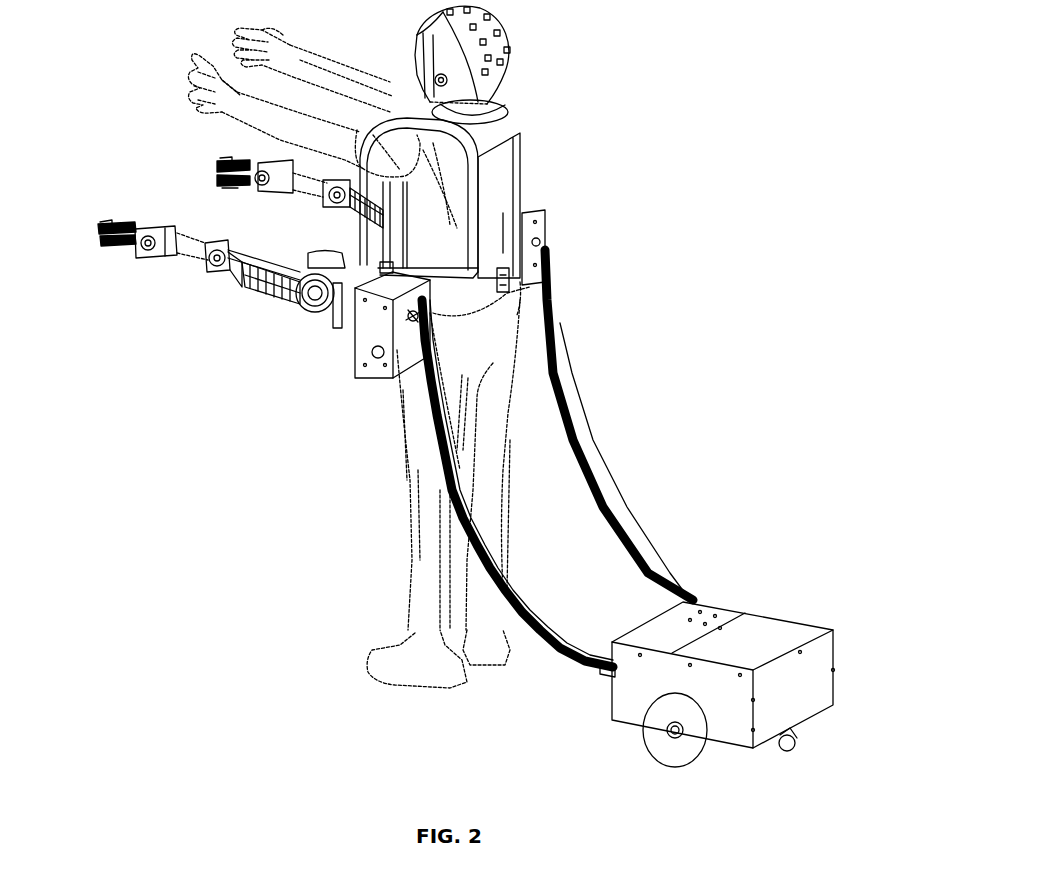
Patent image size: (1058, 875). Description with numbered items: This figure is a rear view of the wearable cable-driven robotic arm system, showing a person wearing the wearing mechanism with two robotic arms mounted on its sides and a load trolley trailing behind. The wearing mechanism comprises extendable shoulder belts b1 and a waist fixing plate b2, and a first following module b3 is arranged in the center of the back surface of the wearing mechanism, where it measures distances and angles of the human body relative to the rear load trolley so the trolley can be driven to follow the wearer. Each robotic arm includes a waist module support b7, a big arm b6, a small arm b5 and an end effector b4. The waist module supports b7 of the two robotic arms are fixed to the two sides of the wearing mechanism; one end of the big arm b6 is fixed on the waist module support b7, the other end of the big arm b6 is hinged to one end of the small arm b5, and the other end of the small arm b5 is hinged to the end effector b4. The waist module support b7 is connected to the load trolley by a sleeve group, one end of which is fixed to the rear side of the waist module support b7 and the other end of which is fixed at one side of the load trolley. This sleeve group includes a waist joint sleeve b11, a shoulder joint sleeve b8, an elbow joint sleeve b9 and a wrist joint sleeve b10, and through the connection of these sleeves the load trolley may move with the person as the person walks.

The extendable shoulder belts b1 is at (470, 150).
The waist fixing plate b2 is at (540, 238).
The first following module b3 is at (503, 275).
The end effector b4 is at (105, 238).
The small arm b5 is at (180, 250).
The big arm b6 is at (237, 291).
The waist module support b7 is at (355, 290).
The shoulder joint sleeve b8 is at (406, 306).
The elbow joint sleeve b9 is at (412, 318).
The wrist joint sleeve b10 is at (493, 598).
The waist joint sleeve b11 is at (600, 664).